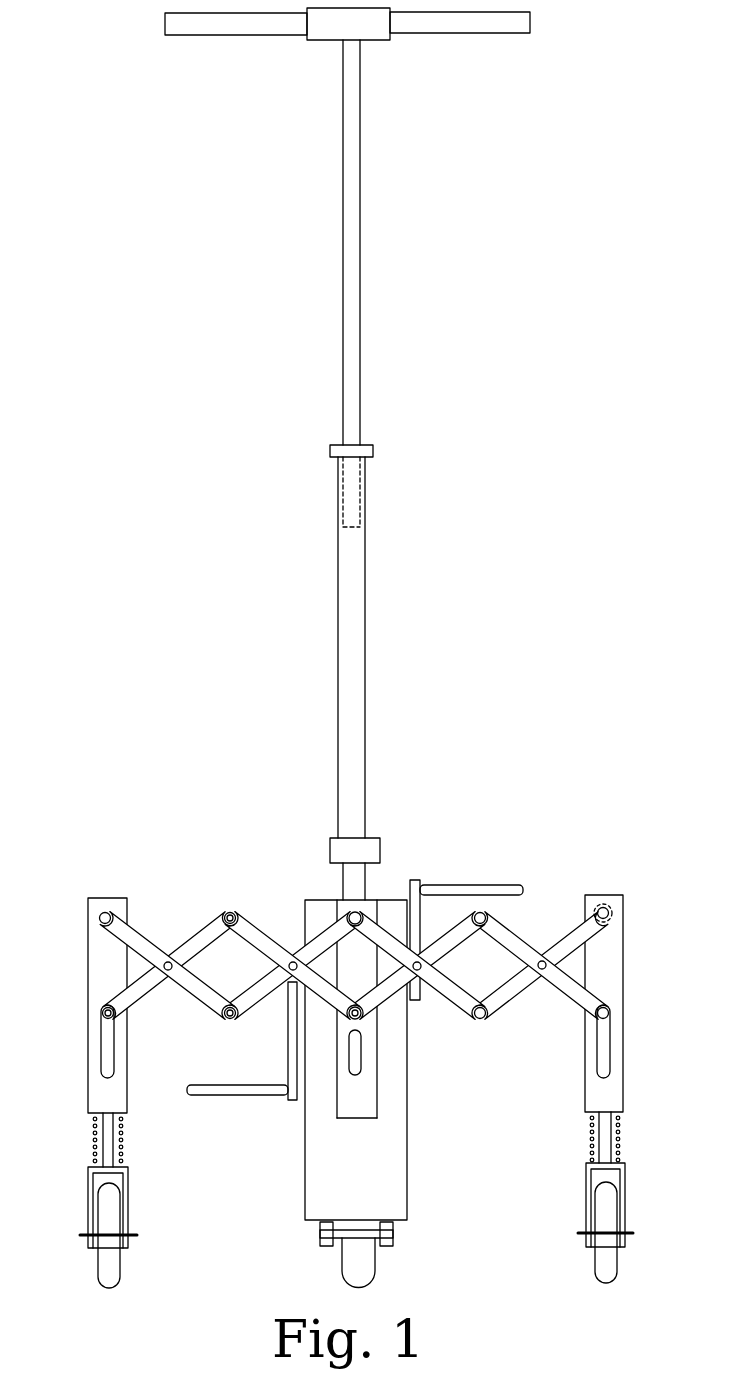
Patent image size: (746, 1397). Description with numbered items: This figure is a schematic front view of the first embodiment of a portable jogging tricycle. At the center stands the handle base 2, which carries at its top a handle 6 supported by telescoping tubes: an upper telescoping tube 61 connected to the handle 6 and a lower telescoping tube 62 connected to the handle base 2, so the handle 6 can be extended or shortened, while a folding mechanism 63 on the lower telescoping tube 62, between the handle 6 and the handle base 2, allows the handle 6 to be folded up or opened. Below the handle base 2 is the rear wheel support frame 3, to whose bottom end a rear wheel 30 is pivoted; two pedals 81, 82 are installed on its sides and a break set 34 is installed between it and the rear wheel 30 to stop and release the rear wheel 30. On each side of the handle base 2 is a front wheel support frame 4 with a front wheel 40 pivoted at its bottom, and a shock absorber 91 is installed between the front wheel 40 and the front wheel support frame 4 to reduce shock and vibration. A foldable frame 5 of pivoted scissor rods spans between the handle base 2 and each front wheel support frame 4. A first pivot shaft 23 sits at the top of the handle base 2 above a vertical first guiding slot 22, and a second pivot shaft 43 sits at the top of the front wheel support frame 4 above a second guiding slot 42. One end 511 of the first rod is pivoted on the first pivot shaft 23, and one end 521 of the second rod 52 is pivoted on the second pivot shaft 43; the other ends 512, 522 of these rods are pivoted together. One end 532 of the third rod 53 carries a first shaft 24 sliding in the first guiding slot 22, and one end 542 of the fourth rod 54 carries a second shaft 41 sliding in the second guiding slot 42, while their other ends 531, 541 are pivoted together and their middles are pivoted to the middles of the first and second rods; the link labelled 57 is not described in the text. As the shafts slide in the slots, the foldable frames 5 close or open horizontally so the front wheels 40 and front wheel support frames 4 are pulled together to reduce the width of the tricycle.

The handle 6 is at (442, 22).
The upper telescoping tube 61 is at (352, 275).
The lower telescoping tube 62 is at (358, 598).
The folding mechanism 63 is at (372, 840).
The first pivot shaft 23 is at (358, 892).
The handle base 2 is at (362, 1095).
The first guiding slot 22 is at (362, 1060).
The first shaft 24 is at (360, 1015).
The rear wheel support frame 3 is at (385, 1152).
The rear wheel 30 is at (355, 1255).
The break set 34 is at (393, 1243).
The front wheel support frame 4 is at (612, 965).
The front wheel 40 is at (612, 1215).
The second shaft 41 is at (102, 1013).
The second guiding slot 42 is at (105, 1050).
The second pivot shaft 43 is at (610, 913).
The foldable frame 5 is at (349, 995).
The second rod 52 is at (280, 925).
The third rod 53 is at (452, 1005).
The fourth rod 54 is at (510, 935).
The link 57 is at (155, 950).
The end of first rod 511 is at (333, 895).
The another end of first rod 512 is at (252, 993).
The end of second rod 521 is at (118, 898).
The another end of second rod 522 is at (218, 1022).
The another end of third rod 531 is at (265, 900).
The end of third rod 532 is at (352, 1022).
The another end of fourth rod 541 is at (207, 913).
The end of fourth rod 542 is at (105, 1005).
The pedal 81 is at (470, 890).
The pedal 82 is at (230, 1098).
The shock absorber 91 is at (622, 1150).